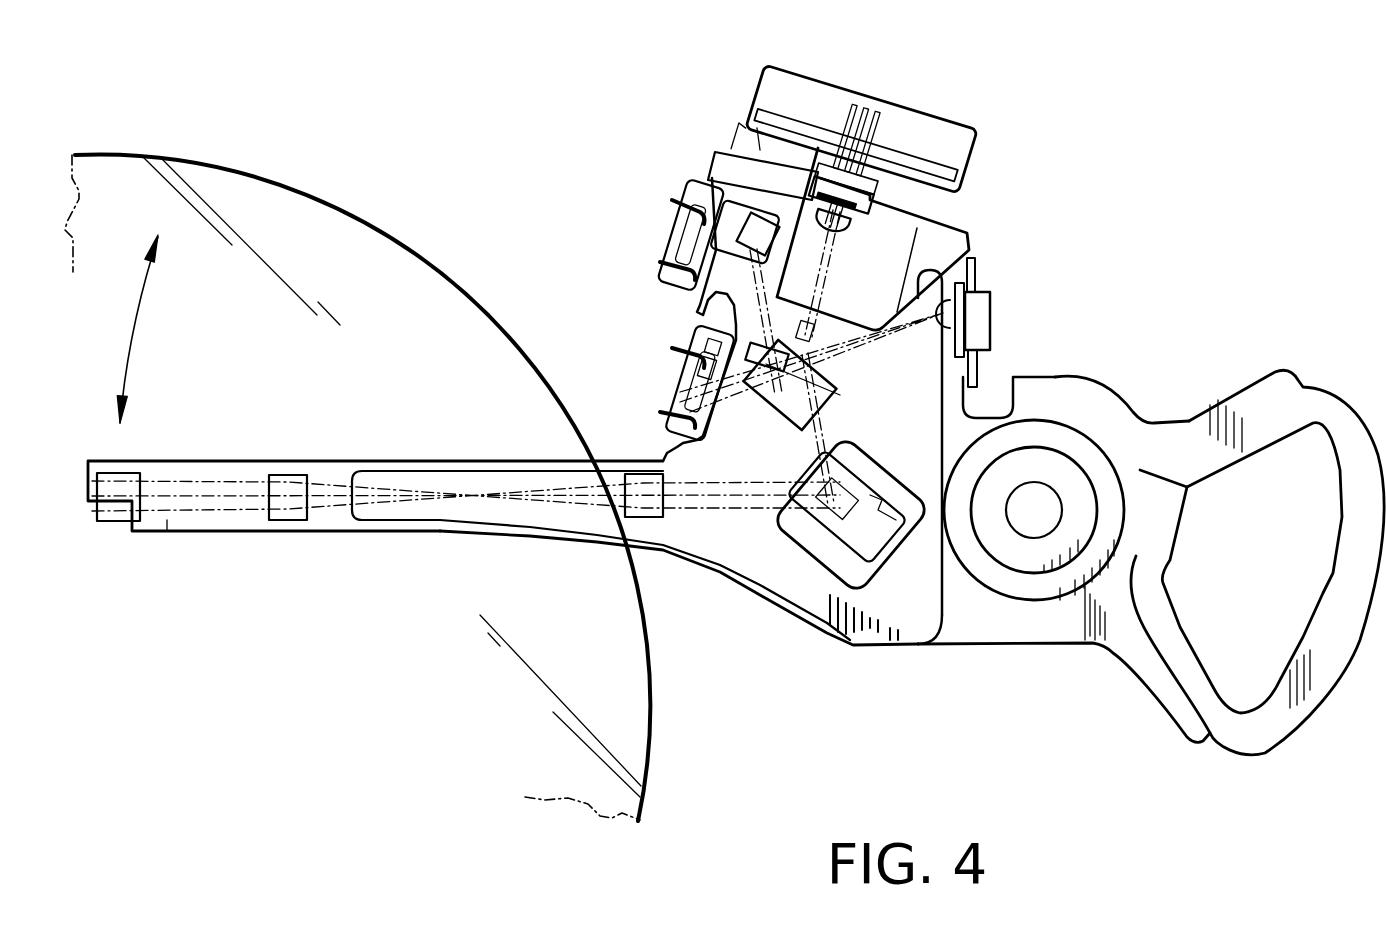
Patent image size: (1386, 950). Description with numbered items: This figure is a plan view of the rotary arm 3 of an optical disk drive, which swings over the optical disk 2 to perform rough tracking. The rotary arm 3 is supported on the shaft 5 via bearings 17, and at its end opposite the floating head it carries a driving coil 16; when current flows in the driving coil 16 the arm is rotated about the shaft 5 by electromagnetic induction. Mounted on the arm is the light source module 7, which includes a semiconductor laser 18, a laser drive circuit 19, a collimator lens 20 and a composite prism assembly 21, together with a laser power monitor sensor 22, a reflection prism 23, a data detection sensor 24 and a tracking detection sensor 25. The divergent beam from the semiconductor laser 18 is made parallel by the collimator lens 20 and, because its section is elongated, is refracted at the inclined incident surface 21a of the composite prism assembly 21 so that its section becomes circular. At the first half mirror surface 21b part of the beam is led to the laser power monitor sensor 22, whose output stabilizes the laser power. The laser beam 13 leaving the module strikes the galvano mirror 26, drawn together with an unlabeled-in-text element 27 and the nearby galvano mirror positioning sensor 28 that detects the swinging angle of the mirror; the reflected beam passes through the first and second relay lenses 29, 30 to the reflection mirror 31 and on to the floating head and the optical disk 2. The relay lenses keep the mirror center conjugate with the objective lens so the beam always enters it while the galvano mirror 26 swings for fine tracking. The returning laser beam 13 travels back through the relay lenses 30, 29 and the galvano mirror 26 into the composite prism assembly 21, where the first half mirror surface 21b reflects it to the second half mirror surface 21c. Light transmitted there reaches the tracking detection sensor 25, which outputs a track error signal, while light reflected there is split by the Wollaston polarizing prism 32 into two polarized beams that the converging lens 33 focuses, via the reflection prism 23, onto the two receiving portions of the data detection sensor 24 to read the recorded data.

The optical disk 2 is at (290, 180).
The rotary arm 3 is at (455, 531).
The shaft 5 is at (1030, 448).
The light source module 7 is at (614, 110).
The laser beam 13 is at (224, 461).
The driving coil 16 is at (1308, 385).
The bearings 17 is at (1079, 460).
The semiconductor laser 18 is at (842, 138).
The laser drive circuit 19 is at (910, 160).
The collimator lens 20 is at (851, 232).
The composite prism assembly 21 is at (830, 350).
The incident surface 21a is at (812, 335).
The first half mirror surface 21b is at (842, 397).
The second half mirror surface 21c is at (768, 408).
The laser power monitor sensor 22 is at (990, 296).
The reflection prism 23 is at (745, 228).
The data detection sensor 24 is at (665, 222).
The tracking detection sensor 25 is at (660, 406).
The galvano mirror 26 is at (840, 505).
The mirror holder 27 is at (808, 555).
The galvano mirror positioning sensor 28 is at (868, 542).
The first relay lens 29 is at (631, 512).
The second relay lens 30 is at (290, 520).
The reflection mirror 31 is at (104, 521).
The Wollaston polarizing prism 32 is at (705, 366).
The converging lens 33 is at (712, 345).